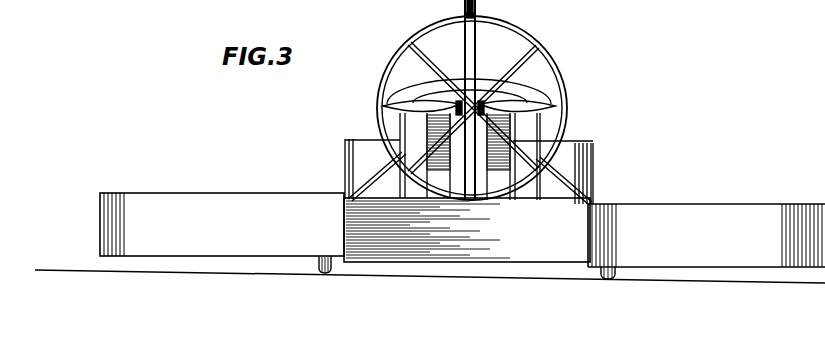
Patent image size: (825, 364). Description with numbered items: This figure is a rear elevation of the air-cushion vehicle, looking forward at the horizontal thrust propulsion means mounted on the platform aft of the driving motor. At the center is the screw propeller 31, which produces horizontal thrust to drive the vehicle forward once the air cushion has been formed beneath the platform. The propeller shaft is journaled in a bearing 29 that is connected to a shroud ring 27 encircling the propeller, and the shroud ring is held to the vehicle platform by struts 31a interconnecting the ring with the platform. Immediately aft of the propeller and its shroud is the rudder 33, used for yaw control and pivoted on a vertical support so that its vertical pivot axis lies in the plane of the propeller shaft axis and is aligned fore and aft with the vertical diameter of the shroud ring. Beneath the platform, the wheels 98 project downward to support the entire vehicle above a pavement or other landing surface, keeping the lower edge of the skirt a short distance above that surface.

The shroud ring 27 is at (393, 53).
The bearing 29 is at (468, 100).
The screw propeller 31 is at (390, 107).
The struts 31a is at (397, 171).
The rudder 33 is at (473, 40).
The wheels 98 is at (325, 273).